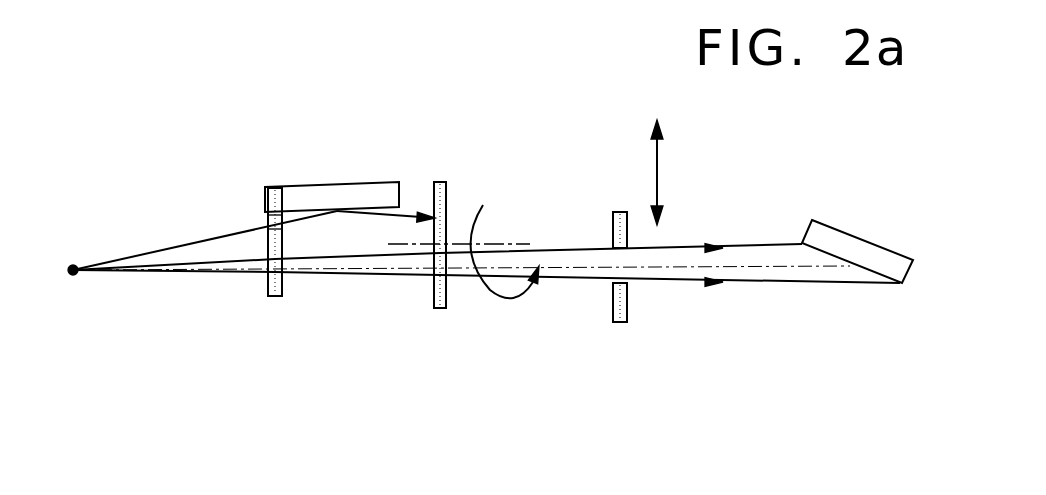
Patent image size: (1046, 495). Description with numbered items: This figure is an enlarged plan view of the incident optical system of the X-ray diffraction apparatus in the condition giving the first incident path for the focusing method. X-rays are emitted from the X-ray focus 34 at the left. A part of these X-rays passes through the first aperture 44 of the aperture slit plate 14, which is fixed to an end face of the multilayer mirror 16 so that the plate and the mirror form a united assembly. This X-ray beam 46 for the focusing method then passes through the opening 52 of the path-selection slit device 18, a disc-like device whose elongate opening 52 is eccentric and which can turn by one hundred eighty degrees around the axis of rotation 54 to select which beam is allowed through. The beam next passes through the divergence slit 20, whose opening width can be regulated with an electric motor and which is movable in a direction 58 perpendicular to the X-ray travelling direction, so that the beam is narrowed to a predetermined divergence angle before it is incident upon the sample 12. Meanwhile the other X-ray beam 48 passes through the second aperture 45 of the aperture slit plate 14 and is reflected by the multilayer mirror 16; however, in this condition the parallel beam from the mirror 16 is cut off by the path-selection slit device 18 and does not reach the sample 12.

The sample 12 is at (873, 238).
The aperture slit plate 14 is at (277, 297).
The multilayer mirror 16 is at (358, 182).
The path-selection slit device 18 is at (440, 182).
The divergence slit 20 is at (620, 325).
The X-ray focus 34 is at (75, 278).
The first aperture 44 is at (290, 277).
The second aperture 45 is at (267, 221).
The X-ray beam for the focusing method 46 is at (373, 278).
The other X-ray beam 48 is at (193, 242).
The opening 52 is at (457, 277).
The axis of rotation 54 is at (507, 243).
The direction 58 is at (658, 172).